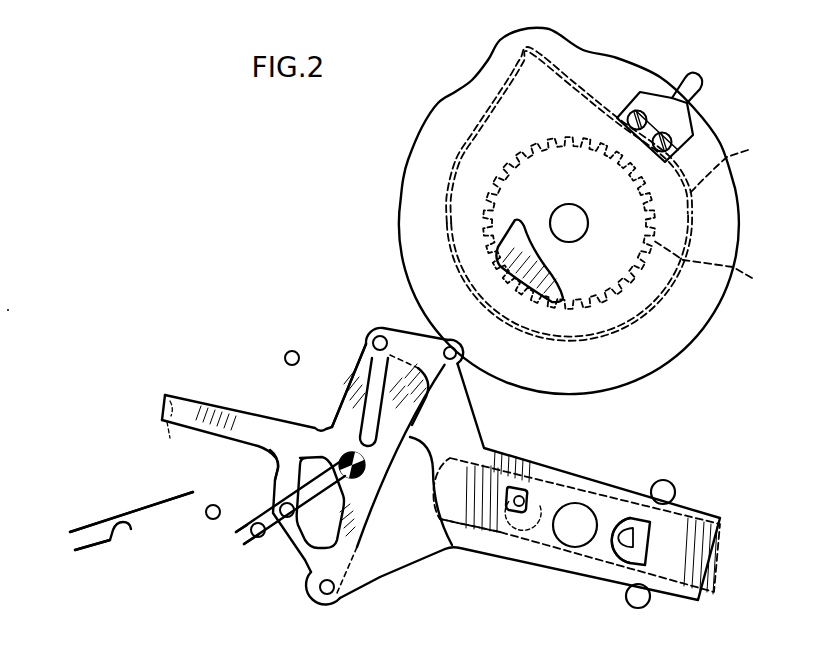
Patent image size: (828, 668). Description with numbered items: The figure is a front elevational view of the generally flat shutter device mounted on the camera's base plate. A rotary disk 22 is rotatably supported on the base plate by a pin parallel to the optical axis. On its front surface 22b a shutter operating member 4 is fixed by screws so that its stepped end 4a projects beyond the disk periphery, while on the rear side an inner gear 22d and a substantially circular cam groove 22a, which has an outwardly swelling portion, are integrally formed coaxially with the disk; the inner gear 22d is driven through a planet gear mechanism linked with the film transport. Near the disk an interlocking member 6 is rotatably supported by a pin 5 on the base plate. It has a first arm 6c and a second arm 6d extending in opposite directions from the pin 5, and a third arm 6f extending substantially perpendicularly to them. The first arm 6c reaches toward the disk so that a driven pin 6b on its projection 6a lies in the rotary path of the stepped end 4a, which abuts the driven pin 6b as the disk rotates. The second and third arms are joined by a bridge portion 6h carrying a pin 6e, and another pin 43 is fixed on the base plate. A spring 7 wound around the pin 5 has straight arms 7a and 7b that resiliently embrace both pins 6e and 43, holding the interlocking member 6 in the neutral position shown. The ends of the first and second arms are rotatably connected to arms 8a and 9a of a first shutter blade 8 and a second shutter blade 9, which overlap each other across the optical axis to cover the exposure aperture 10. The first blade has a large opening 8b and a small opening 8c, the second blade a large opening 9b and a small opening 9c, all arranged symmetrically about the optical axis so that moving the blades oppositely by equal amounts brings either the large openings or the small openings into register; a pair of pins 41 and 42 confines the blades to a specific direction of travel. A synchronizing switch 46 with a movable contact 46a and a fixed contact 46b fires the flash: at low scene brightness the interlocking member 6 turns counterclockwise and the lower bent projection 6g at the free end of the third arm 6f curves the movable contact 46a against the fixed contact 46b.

The shutter operating member 4 is at (655, 97).
The stepped end 4a is at (695, 80).
The pin 5 is at (347, 456).
The interlocking member 6 is at (322, 444).
The projection 6a is at (447, 380).
The driven pin 6b is at (458, 366).
The first arm 6c is at (357, 367).
The second arm 6d is at (306, 572).
The pin 6e is at (282, 506).
The third arm 6f is at (212, 403).
The lower bent projection 6g is at (165, 434).
The bridge portion 6h is at (275, 466).
The spring 7 is at (356, 489).
The arm of spring 7a is at (267, 538).
The arm of spring 7b is at (250, 516).
The first shutter blade 8 is at (565, 546).
The arm of first shutter blade 8a is at (366, 352).
The large opening 8b is at (628, 520).
The small opening 8c is at (524, 502).
The second shutter blade 9 is at (531, 555).
The arm of second shutter blade 9a is at (360, 578).
The large opening 9b is at (498, 532).
The small opening 9c is at (621, 546).
The exposure aperture 10 is at (566, 552).
The rotary disk 22 is at (725, 222).
The cam groove 22a is at (742, 160).
The front surface 22b is at (693, 307).
The inner gear 22d is at (726, 266).
The pin 41 is at (676, 490).
The pin 42 is at (650, 604).
The pin 43 is at (254, 535).
The synchronizing switch 46 is at (73, 521).
The movable contact 46a is at (138, 508).
The fixed contact 46b is at (100, 542).